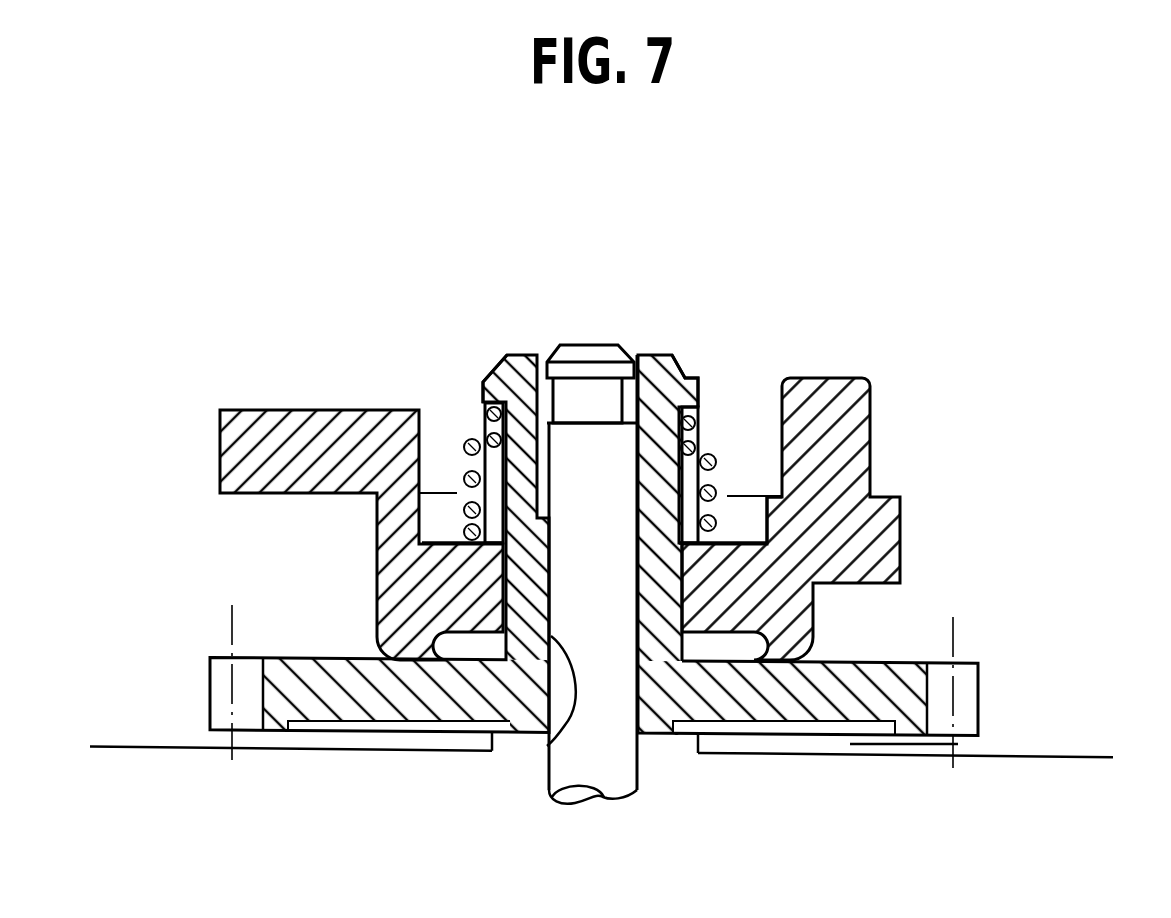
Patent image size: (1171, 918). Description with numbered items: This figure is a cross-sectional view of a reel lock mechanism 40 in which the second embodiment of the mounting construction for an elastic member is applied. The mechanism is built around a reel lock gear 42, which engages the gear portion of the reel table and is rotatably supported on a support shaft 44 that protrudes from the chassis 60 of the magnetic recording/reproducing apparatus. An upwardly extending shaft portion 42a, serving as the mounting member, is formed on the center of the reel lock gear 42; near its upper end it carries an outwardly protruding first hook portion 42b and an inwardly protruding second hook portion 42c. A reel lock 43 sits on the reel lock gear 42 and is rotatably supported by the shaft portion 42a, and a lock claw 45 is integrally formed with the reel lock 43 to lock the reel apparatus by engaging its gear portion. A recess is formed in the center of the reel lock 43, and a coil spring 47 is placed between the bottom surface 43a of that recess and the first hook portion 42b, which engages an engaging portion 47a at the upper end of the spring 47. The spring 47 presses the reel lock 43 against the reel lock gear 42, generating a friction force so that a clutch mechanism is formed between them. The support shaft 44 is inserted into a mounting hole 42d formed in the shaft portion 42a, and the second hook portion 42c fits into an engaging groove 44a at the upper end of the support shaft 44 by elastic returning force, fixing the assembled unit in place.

The reel lock mechanism 40 is at (441, 210).
The reel lock gear 42 is at (897, 660).
The shaft portion 42a is at (665, 583).
The first hook portion 42b is at (487, 376).
The second hook portion 42c is at (613, 350).
The mounting hole 42d is at (547, 746).
The reel lock 43 is at (870, 378).
The bottom surface 43a is at (770, 517).
The support shaft 44 is at (608, 752).
The engaging groove 44a is at (592, 392).
The lock claw 45 is at (240, 445).
The coil spring 47 is at (717, 452).
The engaging portion 47a is at (483, 406).
The chassis 60 is at (1047, 757).